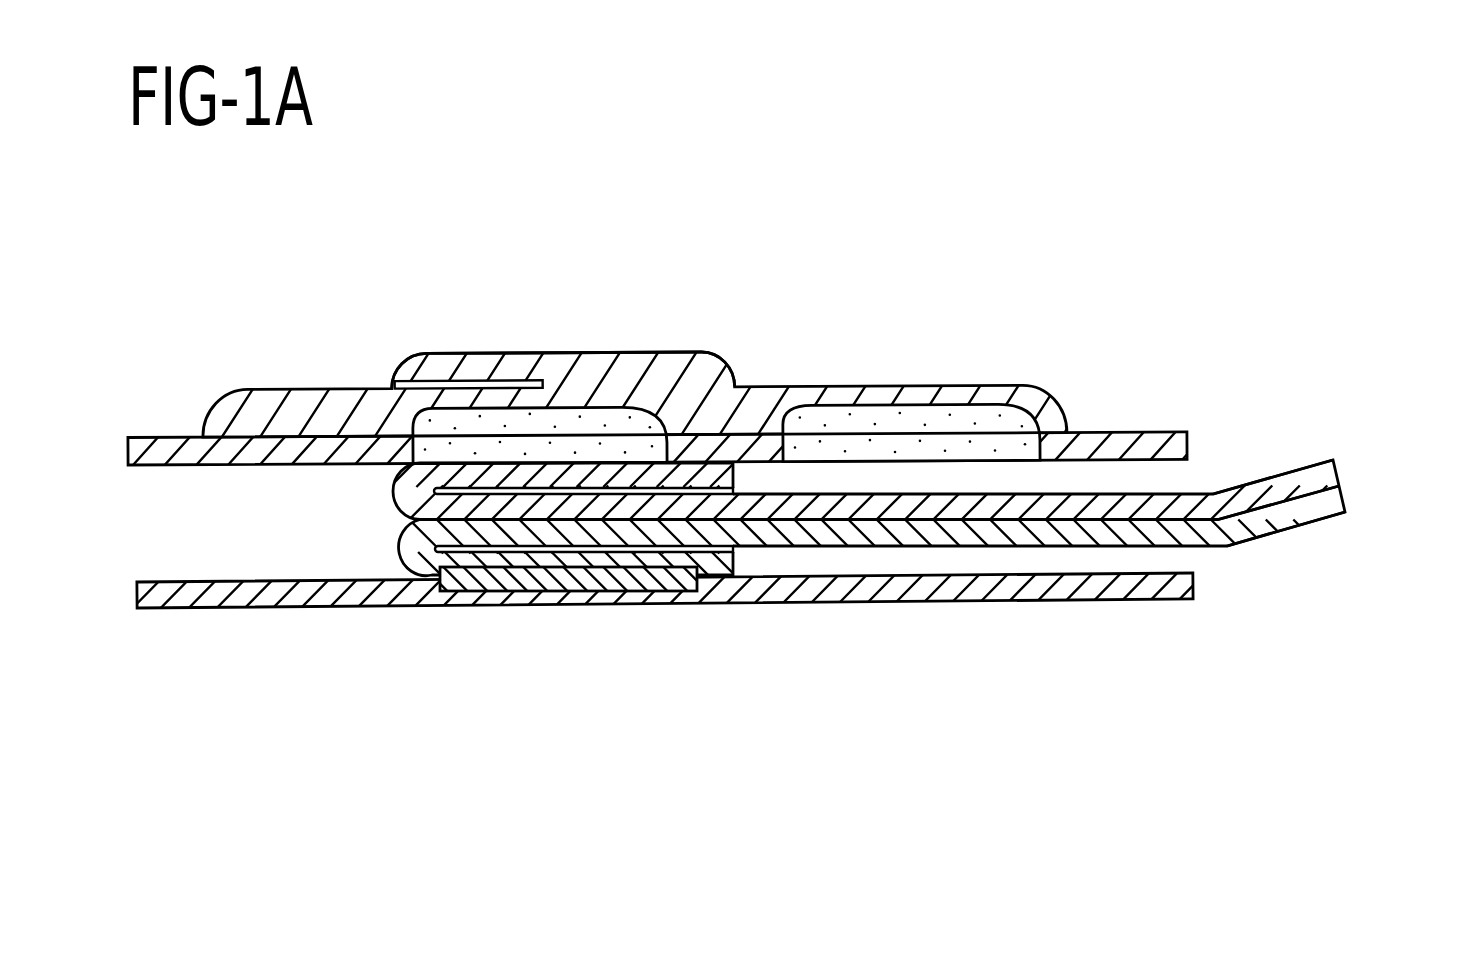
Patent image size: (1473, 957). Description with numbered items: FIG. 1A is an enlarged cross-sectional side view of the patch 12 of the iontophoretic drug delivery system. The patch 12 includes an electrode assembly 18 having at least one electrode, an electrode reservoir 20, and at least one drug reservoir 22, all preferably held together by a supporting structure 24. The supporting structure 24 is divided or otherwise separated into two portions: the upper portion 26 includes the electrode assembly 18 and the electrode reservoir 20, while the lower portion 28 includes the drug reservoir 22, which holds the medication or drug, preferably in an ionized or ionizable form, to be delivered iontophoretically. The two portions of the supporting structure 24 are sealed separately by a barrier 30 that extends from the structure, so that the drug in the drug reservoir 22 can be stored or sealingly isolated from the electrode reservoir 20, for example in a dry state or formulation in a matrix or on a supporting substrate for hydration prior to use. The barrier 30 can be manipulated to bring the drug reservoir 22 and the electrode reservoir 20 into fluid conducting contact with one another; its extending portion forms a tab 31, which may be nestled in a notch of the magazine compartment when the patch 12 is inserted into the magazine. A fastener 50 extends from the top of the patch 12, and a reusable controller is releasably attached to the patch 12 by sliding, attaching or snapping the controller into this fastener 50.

The patch 12 is at (788, 387).
The electrode assembly 18 is at (505, 420).
The electrode reservoir 20 is at (620, 447).
The drug reservoir 22 is at (580, 605).
The supporting structure 24 is at (1127, 432).
The upper portion of the supporting structure 26 is at (1188, 447).
The lower portion of the supporting structure 28 is at (1195, 585).
The barrier 30 is at (1293, 532).
The tab 31 is at (1283, 465).
The fastener 50 is at (542, 353).